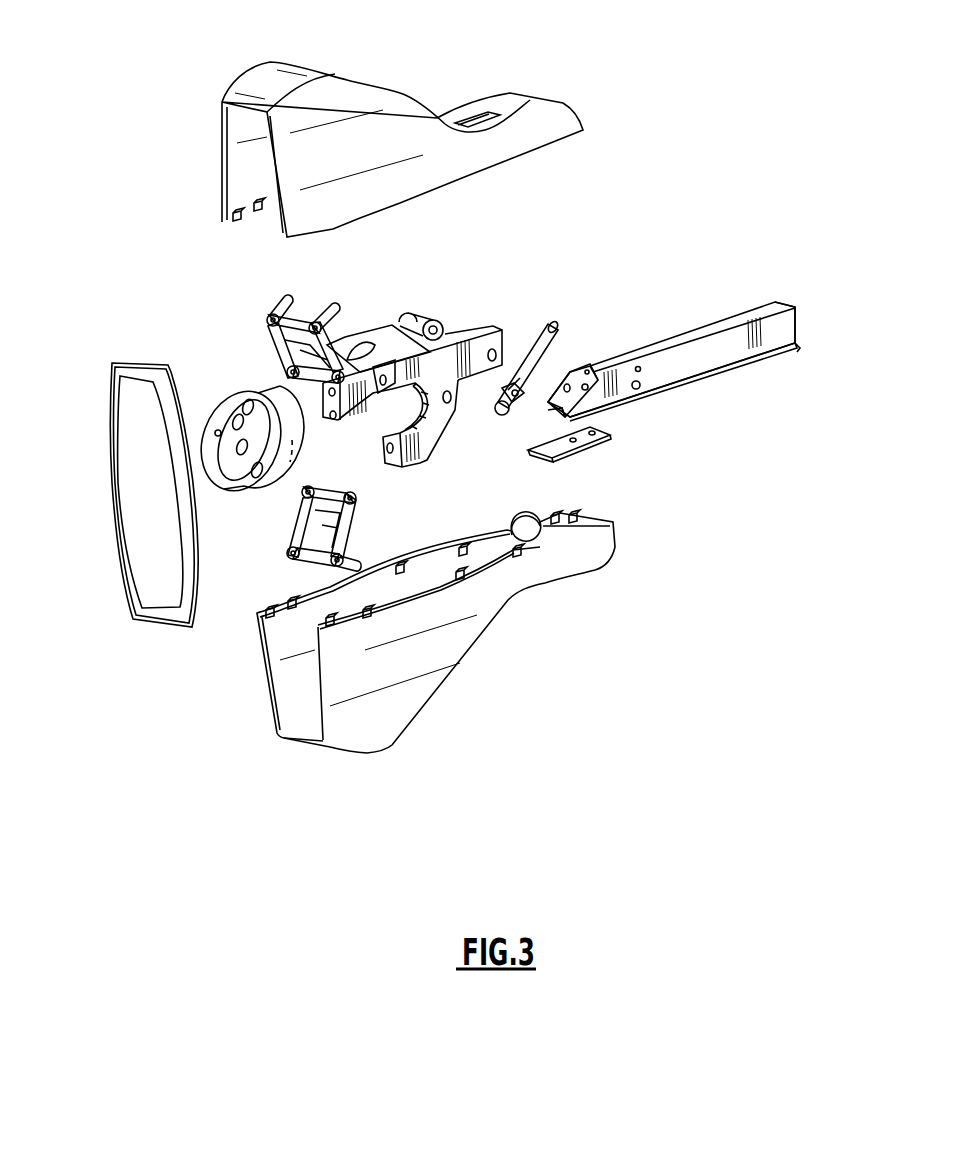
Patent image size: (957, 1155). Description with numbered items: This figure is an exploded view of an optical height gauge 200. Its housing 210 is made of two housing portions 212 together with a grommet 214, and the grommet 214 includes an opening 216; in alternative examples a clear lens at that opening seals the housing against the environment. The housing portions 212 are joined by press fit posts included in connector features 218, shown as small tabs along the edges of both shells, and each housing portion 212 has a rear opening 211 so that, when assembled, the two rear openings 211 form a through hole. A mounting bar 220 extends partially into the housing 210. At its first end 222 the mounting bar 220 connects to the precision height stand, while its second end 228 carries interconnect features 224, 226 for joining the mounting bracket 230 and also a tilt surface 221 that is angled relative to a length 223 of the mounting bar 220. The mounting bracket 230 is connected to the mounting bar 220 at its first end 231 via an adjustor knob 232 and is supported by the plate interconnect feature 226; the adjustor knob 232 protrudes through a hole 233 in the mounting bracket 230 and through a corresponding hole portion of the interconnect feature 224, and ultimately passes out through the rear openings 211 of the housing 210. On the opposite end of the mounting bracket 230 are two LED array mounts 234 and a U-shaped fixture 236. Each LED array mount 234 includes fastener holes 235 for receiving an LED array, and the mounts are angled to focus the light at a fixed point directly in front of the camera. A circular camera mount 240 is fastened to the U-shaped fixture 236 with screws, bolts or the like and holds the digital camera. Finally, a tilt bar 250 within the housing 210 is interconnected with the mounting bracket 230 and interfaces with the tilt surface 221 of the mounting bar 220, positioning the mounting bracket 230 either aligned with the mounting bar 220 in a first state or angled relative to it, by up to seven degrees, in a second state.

The optical height gauge 200 is at (712, 112).
The housing 210 is at (419, 387).
The rear opening 211 is at (523, 533).
The housing portion 212 is at (320, 103).
The grommet 214 is at (125, 470).
The opening 216 is at (140, 417).
The connector feature 218 is at (240, 225).
The mounting bar 220 is at (713, 358).
The tilt surface 221 is at (567, 380).
The first end 222 is at (800, 320).
The length 223 is at (708, 378).
The interconnect feature 224 is at (636, 390).
The plate interconnect feature 226 is at (580, 443).
The second end 228 is at (548, 410).
The mounting bracket 230 is at (383, 327).
The first end 231 is at (516, 345).
The adjustor knob 232 is at (430, 327).
The hole 233 is at (492, 349).
The LED array mount 234 is at (345, 322).
The fastener hole 235 is at (287, 298).
The U-shaped fixture 236 is at (433, 440).
The camera mount 240 is at (240, 388).
The tilt bar 250 is at (550, 325).